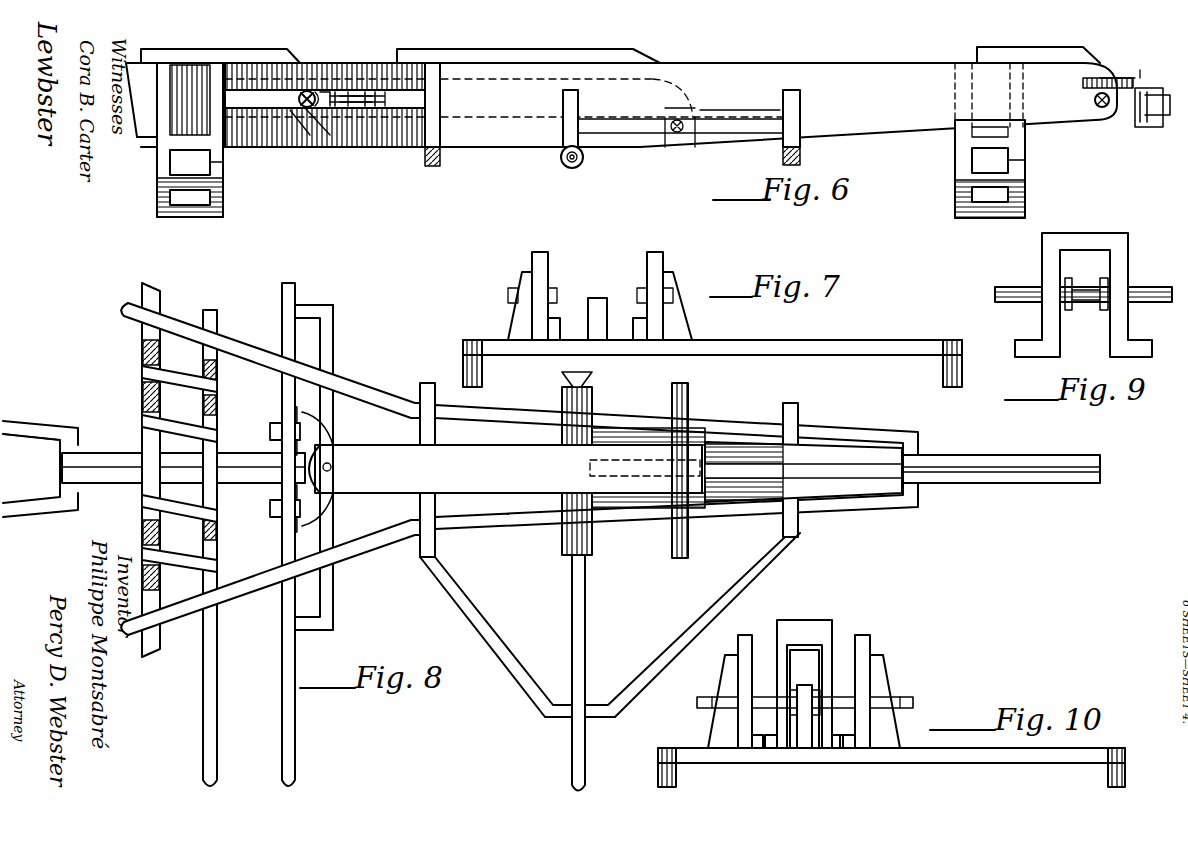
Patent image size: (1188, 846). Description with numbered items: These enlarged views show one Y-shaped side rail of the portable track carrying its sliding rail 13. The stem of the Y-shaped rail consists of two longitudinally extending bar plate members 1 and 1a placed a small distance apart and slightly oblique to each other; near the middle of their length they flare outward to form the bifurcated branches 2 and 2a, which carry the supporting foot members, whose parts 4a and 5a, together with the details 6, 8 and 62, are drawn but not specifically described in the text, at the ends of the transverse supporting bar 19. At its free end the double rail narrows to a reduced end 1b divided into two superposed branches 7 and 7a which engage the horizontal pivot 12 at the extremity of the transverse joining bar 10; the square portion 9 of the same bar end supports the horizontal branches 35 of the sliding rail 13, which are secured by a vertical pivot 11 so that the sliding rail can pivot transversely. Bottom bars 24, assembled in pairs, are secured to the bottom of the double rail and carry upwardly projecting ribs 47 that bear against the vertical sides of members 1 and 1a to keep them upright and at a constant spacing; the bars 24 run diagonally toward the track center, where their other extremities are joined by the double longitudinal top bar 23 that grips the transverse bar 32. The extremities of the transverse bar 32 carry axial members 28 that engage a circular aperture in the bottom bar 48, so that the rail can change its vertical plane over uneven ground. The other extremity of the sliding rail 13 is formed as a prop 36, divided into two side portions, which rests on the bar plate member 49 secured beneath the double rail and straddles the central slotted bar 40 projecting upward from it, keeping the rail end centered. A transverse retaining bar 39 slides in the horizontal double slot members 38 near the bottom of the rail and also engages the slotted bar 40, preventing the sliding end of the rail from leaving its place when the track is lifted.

In FIG. 6, the bar plate member 1 is at (588, 68).
In FIG. 7, the bar plate member 1 is at (538, 262).
In FIG. 10, the bar plate member 1 is at (740, 642).
In FIG. 8, the bar plate member 1 is at (43, 432).
In FIG. 7, the bar plate member 1a is at (655, 256).
In FIG. 10, the bar plate member 1a is at (872, 636).
In FIG. 8, the bar plate member 1a is at (38, 520).
In FIG. 6, the reduced end of Y-shaped rail 1b is at (232, 55).
In FIG. 8, the reduced end of Y-shaped rail 1b is at (115, 456).
In FIG. 6, the bifurcated branch 2 is at (262, 72).
In FIG. 8, the bifurcated branch 2 is at (180, 338).
In FIG. 8, the bifurcated branch 2a is at (255, 582).
In FIG. 6, the upright post 4a is at (162, 164).
In FIG. 8, the upright post 4a is at (142, 396).
In FIG. 6, the rod 5a is at (223, 162).
In FIG. 8, the rod 5a is at (218, 404).
In FIG. 6, the cross bar 6 is at (190, 150).
In FIG. 8, the cross bar 6 is at (177, 420).
In FIG. 6, the branch of reduced rail end 7 is at (307, 88).
In FIG. 6, the branch of reduced rail end 7a is at (325, 128).
In FIG. 8, the bracket 8 is at (318, 303).
In FIG. 6, the horizontal bar portion 9 is at (360, 106).
In FIG. 8, the horizontal bar portion 9 is at (332, 342).
In FIG. 8, the transverse joining bar 10 is at (282, 293).
In FIG. 6, the vertical pivot 11 is at (350, 80).
In FIG. 8, the vertical pivot 11 is at (333, 467).
In FIG. 6, the horizontal pivot 12 is at (296, 150).
In FIG. 8, the horizontal pivot 12 is at (320, 428).
In FIG. 6, the sliding rail 13 is at (538, 55).
In FIG. 9, the sliding rail 13 is at (1086, 240).
In FIG. 10, the sliding rail 13 is at (810, 625).
In FIG. 8, the sliding rail 13 is at (392, 478).
In FIG. 8, the transverse supporting bar 19 is at (204, 700).
In FIG. 8, the longitudinal top bar 23 is at (563, 720).
In FIG. 6, the bottom bar 24 is at (430, 160).
In FIG. 7, the bottom bar 24 is at (862, 336).
In FIG. 10, the bottom bar 24 is at (1040, 765).
In FIG. 8, the bottom bar 24 is at (436, 432).
In FIG. 8, the axial member 28 is at (592, 378).
In FIG. 8, the transverse bar 32 is at (576, 598).
In FIG. 6, the branches of sliding rail 35 is at (320, 88).
In FIG. 8, the branches of sliding rail 35 is at (270, 432).
In FIG. 6, the prop 36 is at (663, 136).
In FIG. 9, the prop 36 is at (1052, 320).
In FIG. 10, the prop 36 is at (782, 723).
In FIG. 6, the horizontal double slot member 38 is at (725, 132).
In FIG. 6, the transverse retaining bar 39 is at (688, 118).
In FIG. 9, the transverse retaining bar 39 is at (1020, 290).
In FIG. 10, the transverse retaining bar 39 is at (700, 703).
In FIG. 8, the transverse retaining bar 39 is at (688, 396).
In FIG. 6, the central slotted bar member 40 is at (742, 110).
In FIG. 7, the central slotted bar member 40 is at (597, 312).
In FIG. 10, the central slotted bar member 40 is at (803, 690).
In FIG. 8, the central slotted bar member 40 is at (748, 470).
In FIG. 6, the rib 47 is at (434, 110).
In FIG. 7, the rib 47 is at (520, 322).
In FIG. 10, the rib 47 is at (722, 670).
In FIG. 8, the rib 47 is at (424, 393).
In FIG. 6, the bottom bar 48 is at (566, 166).
In FIG. 8, the bottom bar 48 is at (594, 403).
In FIG. 8, the bar plate member 49 is at (732, 448).
In FIG. 6, the rail 62 is at (188, 88).
In FIG. 8, the rail 62 is at (150, 338).